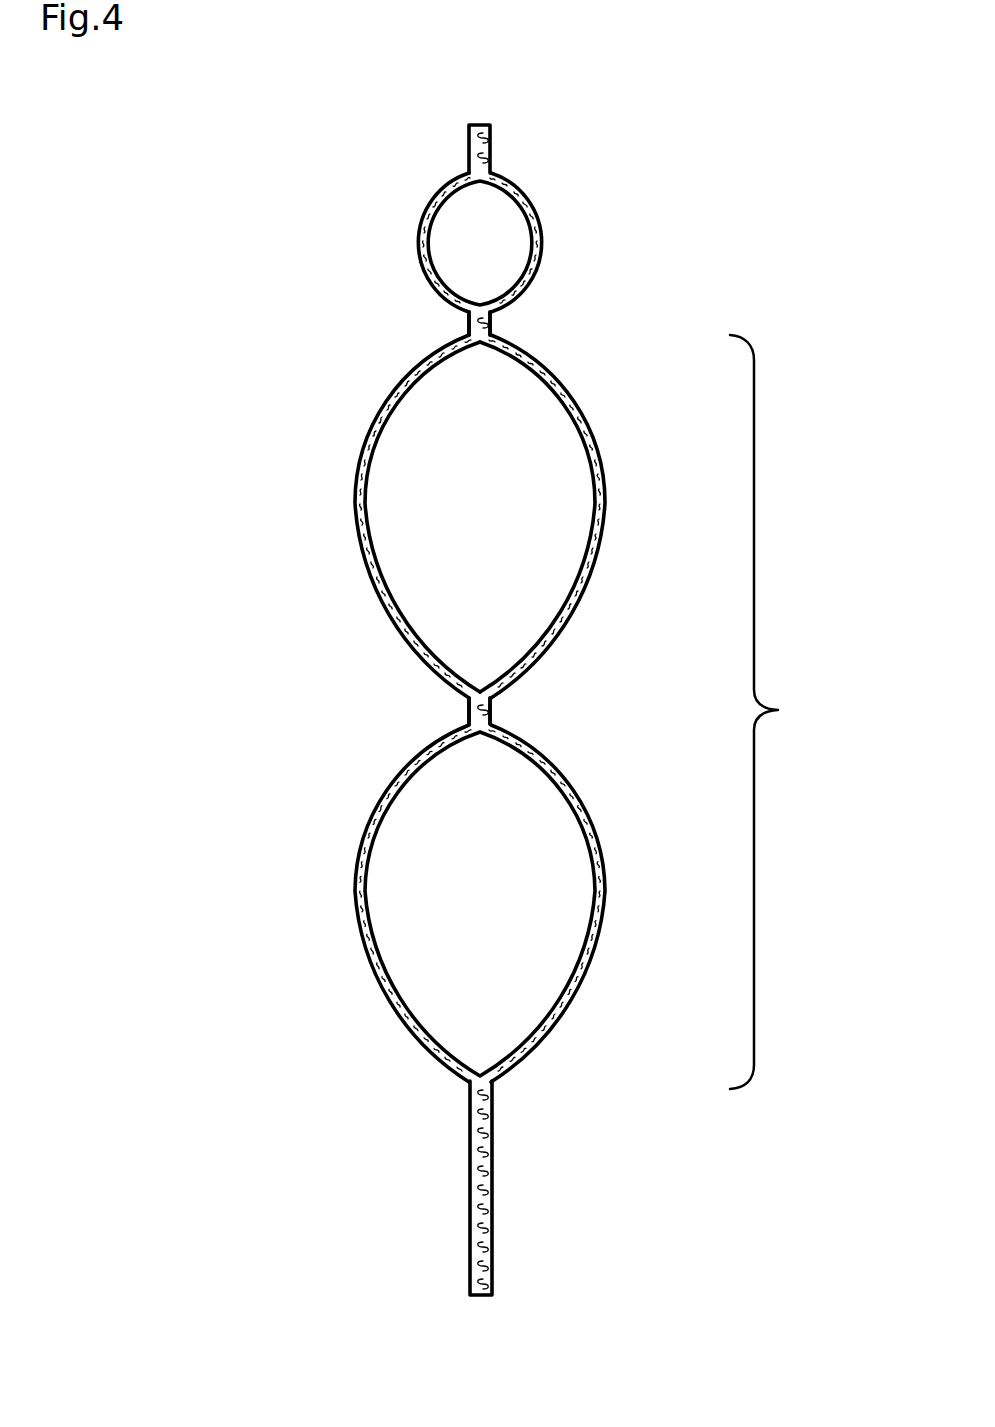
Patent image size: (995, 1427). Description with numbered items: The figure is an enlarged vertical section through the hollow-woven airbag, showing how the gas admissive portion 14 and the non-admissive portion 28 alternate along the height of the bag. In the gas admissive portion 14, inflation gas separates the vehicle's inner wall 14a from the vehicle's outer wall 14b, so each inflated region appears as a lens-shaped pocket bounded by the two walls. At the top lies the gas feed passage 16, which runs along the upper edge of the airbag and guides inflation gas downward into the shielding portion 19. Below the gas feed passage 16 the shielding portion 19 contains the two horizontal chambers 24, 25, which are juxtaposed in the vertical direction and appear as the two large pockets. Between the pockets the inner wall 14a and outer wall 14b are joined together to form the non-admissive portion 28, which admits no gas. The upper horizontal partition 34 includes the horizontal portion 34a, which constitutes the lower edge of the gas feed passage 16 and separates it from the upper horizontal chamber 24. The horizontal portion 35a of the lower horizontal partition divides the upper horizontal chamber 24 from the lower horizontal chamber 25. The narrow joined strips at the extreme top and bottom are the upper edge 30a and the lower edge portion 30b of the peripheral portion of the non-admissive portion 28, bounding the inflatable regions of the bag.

The gas admissive portion 14 is at (527, 710).
The gas feed passage 16 is at (535, 215).
The shielding portion 19 is at (527, 712).
The horizontal chamber 24 is at (448, 516).
The horizontal chamber 25 is at (357, 888).
The non-admissive portion 28 is at (478, 710).
The upper edge of the peripheral portion 30a is at (478, 145).
The lower edge portion of the peripheral portion 30b is at (483, 1247).
The horizontal partition 34 is at (479, 518).
The horizontal portion 34a is at (492, 325).
The horizontal portion 35a is at (468, 708).
The vehicle's inner wall 14a is at (563, 393).
The vehicle's outer wall 14b is at (398, 398).